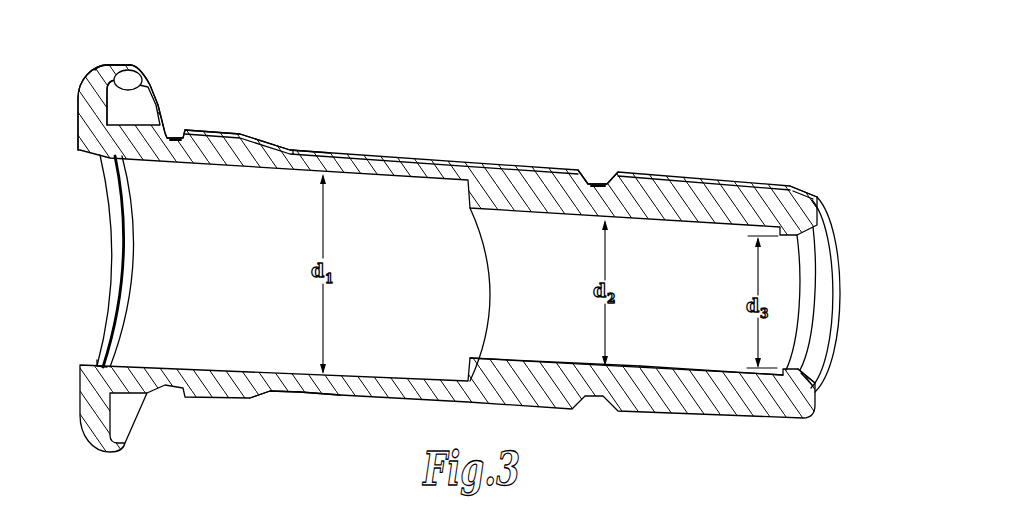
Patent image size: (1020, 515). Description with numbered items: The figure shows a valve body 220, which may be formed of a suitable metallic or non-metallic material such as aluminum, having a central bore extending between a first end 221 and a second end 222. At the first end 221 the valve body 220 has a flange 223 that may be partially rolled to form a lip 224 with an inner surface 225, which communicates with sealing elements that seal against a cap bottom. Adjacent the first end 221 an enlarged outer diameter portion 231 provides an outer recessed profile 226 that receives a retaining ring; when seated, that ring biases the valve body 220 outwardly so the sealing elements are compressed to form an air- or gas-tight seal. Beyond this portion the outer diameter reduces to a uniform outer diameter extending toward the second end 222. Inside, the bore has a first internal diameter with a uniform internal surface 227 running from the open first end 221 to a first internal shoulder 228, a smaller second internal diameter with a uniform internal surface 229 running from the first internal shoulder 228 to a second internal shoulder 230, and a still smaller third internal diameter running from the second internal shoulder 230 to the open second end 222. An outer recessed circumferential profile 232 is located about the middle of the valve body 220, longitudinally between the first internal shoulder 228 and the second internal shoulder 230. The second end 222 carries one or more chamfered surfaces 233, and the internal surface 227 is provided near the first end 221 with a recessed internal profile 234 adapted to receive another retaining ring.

The valve body 220 is at (531, 140).
The first end 221 is at (93, 240).
The second end 222 is at (852, 337).
The flange 223 is at (85, 97).
The lip 224 is at (113, 78).
The inner surface 225 is at (143, 80).
The outer recessed profile 226 is at (173, 137).
The uniform internal surface 227 is at (272, 355).
The first internal shoulder 228 is at (458, 376).
The uniform internal surface 229 is at (547, 353).
The second internal shoulder 230 is at (755, 383).
The enlarged outer diameter portion 231 is at (220, 150).
The outer recessed circumferential profile 232 is at (600, 183).
The chamfered surfaces 233 is at (810, 190).
The recessed internal profile 234 is at (100, 357).